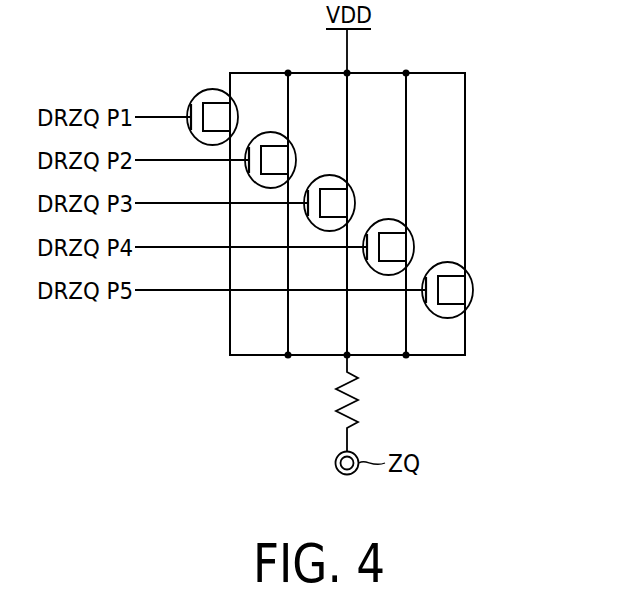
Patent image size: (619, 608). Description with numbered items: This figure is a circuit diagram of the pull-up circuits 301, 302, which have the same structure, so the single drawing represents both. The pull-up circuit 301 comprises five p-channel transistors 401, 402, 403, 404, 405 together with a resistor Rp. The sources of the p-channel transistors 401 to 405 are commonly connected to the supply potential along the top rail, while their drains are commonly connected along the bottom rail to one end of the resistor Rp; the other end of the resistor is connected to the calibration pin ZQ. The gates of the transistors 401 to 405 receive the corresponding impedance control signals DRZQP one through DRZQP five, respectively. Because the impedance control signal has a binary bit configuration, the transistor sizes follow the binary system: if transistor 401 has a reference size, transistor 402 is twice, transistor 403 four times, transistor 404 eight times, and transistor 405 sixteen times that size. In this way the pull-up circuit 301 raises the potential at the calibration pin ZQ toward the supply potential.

The pull-up circuit 301 is at (550, 30).
The pull-up circuit 302 is at (347, 214).
The p-channel transistor 401 is at (238, 107).
The p-channel transistor 402 is at (296, 152).
The p-channel transistor 403 is at (354, 194).
The p-channel transistor 404 is at (413, 240).
The p-channel transistor 405 is at (473, 290).